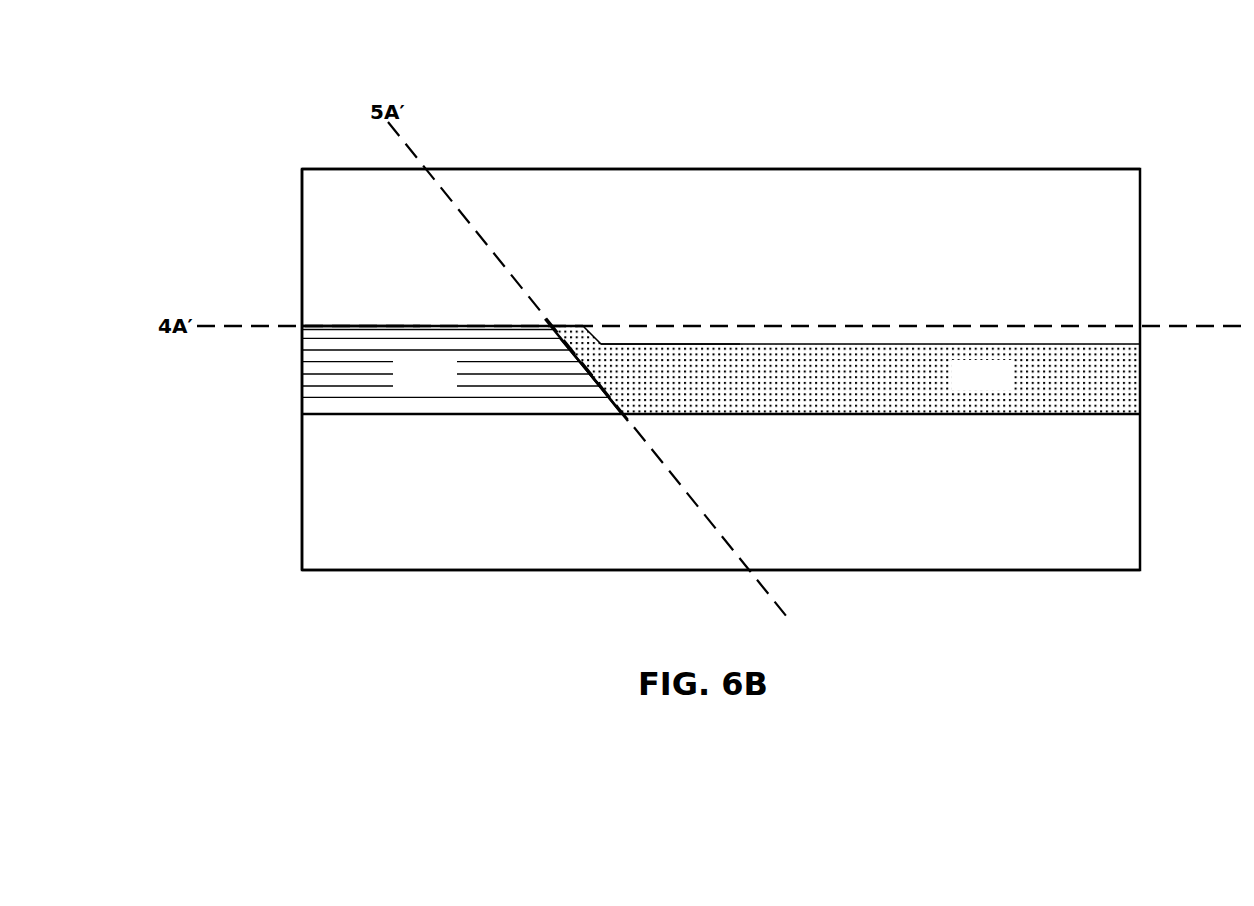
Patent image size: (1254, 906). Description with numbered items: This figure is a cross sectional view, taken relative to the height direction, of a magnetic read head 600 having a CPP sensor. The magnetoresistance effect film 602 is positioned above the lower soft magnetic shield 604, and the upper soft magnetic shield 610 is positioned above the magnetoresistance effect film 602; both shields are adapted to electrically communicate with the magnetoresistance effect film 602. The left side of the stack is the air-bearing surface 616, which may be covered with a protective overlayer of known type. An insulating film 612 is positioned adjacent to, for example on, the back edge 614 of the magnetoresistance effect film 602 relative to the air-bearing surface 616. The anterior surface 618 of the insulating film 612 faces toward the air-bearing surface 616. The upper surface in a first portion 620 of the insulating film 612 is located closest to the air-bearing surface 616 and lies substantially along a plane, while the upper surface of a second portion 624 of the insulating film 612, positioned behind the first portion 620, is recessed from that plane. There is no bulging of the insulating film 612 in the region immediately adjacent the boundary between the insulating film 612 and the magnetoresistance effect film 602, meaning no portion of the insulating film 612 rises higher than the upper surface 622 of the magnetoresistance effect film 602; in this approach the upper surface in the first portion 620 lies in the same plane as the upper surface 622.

The magnetic read head 600 is at (267, 103).
The magnetoresistance effect film 602 is at (445, 381).
The lower soft magnetic shield 604 is at (380, 539).
The upper soft magnetic shield 610 is at (1075, 224).
The insulating film 612 is at (1002, 385).
The back edge 614 is at (608, 392).
The air-bearing surface 616 is at (290, 193).
The anterior surface 618 is at (583, 368).
The first portion 620 is at (563, 318).
The upper surface 622 is at (353, 322).
The second portion 624 is at (668, 337).